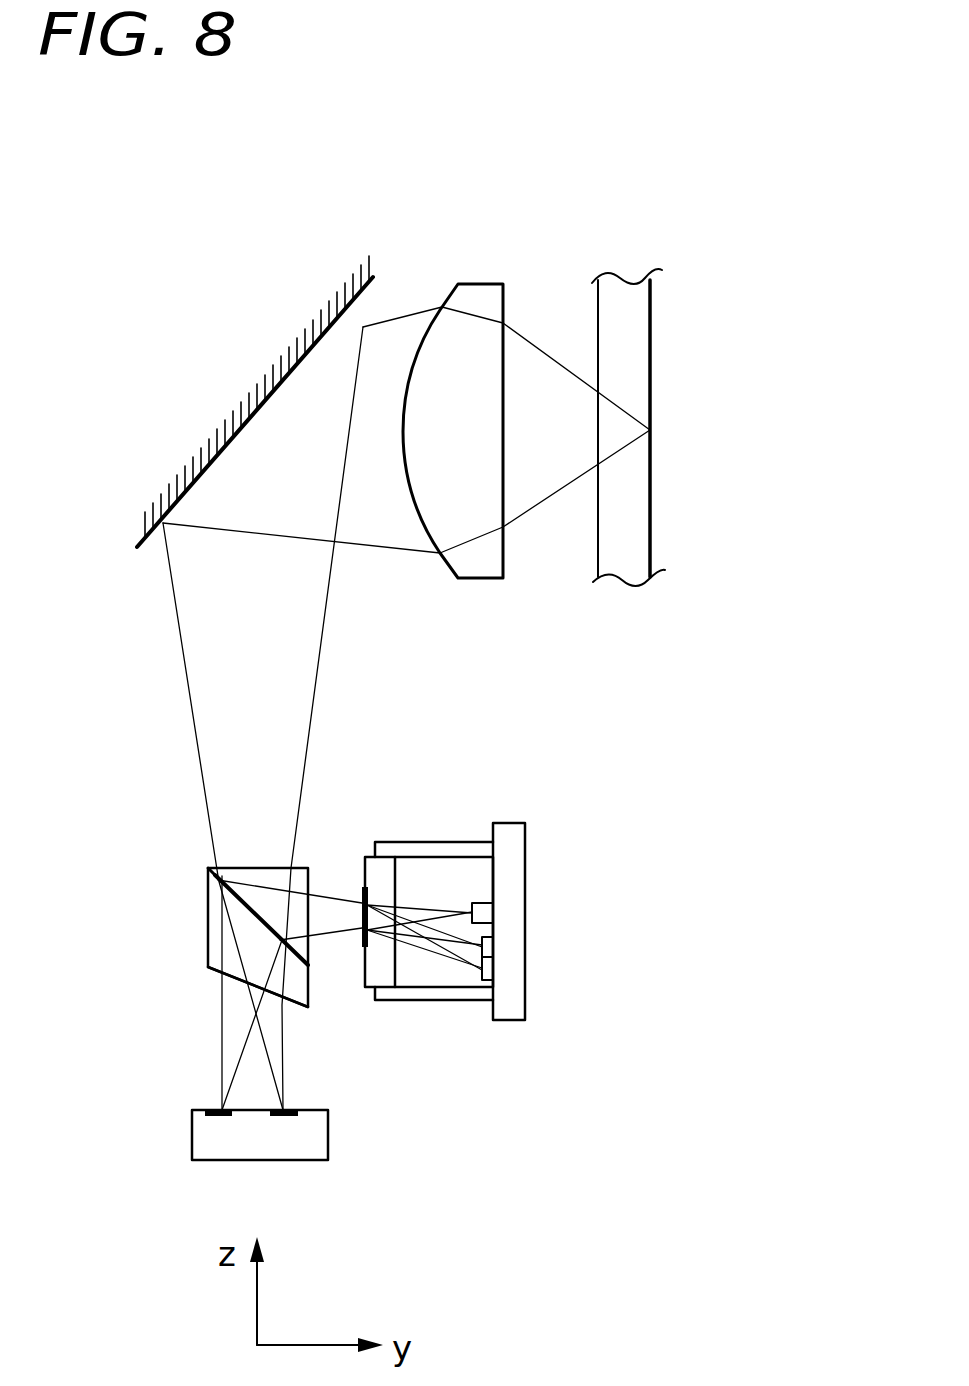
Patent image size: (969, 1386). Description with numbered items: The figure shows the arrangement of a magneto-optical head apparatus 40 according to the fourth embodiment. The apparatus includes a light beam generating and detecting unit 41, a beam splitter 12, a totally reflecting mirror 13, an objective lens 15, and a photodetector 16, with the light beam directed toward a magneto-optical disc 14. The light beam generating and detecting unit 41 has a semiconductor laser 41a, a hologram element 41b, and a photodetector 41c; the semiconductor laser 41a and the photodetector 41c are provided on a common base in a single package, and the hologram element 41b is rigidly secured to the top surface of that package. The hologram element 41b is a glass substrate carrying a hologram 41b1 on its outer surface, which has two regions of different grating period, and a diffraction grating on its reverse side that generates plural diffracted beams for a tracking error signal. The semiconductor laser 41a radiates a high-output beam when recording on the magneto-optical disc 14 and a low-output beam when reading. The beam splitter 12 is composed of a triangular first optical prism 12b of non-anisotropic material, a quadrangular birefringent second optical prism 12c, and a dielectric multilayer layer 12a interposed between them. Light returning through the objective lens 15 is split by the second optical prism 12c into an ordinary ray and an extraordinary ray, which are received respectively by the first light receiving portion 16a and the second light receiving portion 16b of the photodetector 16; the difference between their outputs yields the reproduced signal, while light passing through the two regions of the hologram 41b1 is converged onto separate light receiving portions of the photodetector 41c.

The beam splitter 12 is at (213, 878).
The dielectric multilayer layer 12a is at (208, 888).
The first optical prism 12b is at (276, 876).
The second optical prism 12c is at (207, 968).
The totally reflecting mirror 13 is at (215, 452).
The magneto-optical disc 14 is at (630, 547).
The objective lens 15 is at (485, 290).
The photodetector 16 is at (211, 1170).
The first light receiving portion 16a is at (283, 1117).
The second light receiving portion 16b is at (223, 1122).
The magneto-optical head apparatus 40 is at (600, 340).
The light beam generating and detecting unit 41 is at (507, 885).
The semiconductor laser 41a is at (485, 913).
The hologram element 41b is at (388, 863).
The hologram 41b1 is at (367, 893).
The photodetector 41c is at (488, 948).